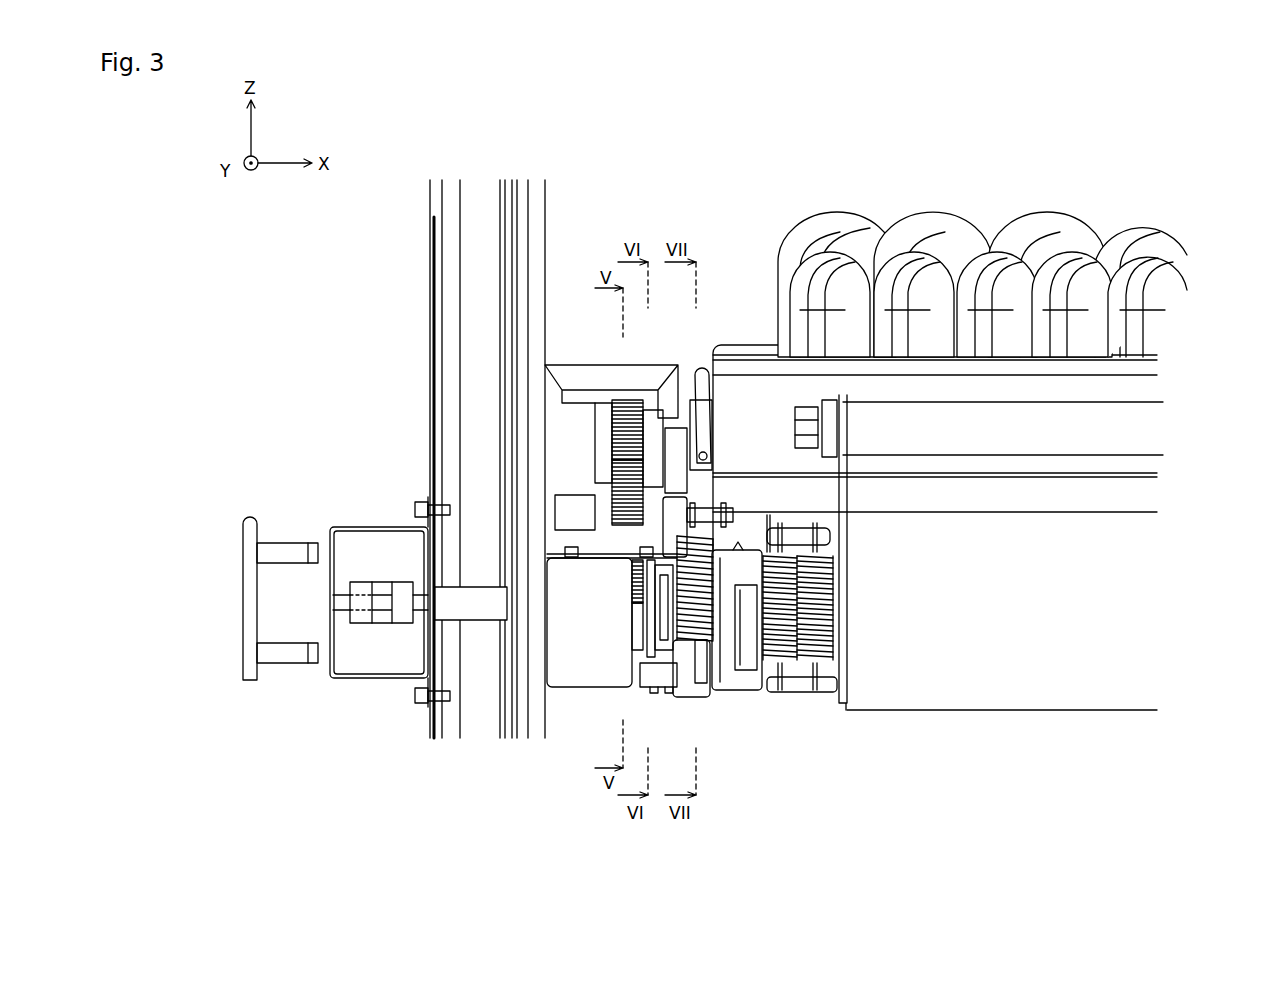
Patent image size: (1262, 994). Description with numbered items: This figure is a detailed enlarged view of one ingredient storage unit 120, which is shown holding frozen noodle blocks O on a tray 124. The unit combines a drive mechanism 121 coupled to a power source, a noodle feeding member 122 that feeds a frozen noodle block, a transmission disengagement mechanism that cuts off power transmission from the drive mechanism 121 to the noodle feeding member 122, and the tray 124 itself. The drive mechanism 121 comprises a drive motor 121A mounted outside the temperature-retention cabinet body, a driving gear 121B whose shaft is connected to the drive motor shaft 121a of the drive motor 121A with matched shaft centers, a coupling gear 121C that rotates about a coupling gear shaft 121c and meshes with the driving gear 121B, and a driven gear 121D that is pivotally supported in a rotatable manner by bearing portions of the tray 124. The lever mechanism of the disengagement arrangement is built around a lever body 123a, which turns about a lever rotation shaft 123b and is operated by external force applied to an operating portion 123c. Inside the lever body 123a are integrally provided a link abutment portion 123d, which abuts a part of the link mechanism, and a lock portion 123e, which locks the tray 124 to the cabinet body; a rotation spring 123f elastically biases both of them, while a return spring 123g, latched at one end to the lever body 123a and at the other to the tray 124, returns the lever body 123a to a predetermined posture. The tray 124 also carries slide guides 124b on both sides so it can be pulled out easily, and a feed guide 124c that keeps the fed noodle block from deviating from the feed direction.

The ingredient storage unit 120 is at (972, 173).
The article O is at (860, 199).
The drive mechanism 121 is at (295, 362).
The drive motor 121A is at (342, 517).
The driving gear 121B is at (623, 572).
The coupling gear 121C is at (598, 482).
The driven gear 121D is at (598, 430).
The drive motor shaft 121a is at (488, 613).
The coupling gear shaft 121c is at (430, 502).
The noodle feeding member 122 is at (700, 412).
The lever body 123a is at (980, 712).
The lever rotation shaft 123b is at (825, 675).
The operating portion 123c is at (1152, 400).
The link abutment portion 123d is at (640, 675).
The lock portion 123e is at (700, 690).
The rotation spring 123f is at (722, 512).
The return spring 123g is at (832, 592).
The tray 124 is at (825, 632).
The slide guide 124b is at (752, 680).
The feed guide 124c is at (745, 345).